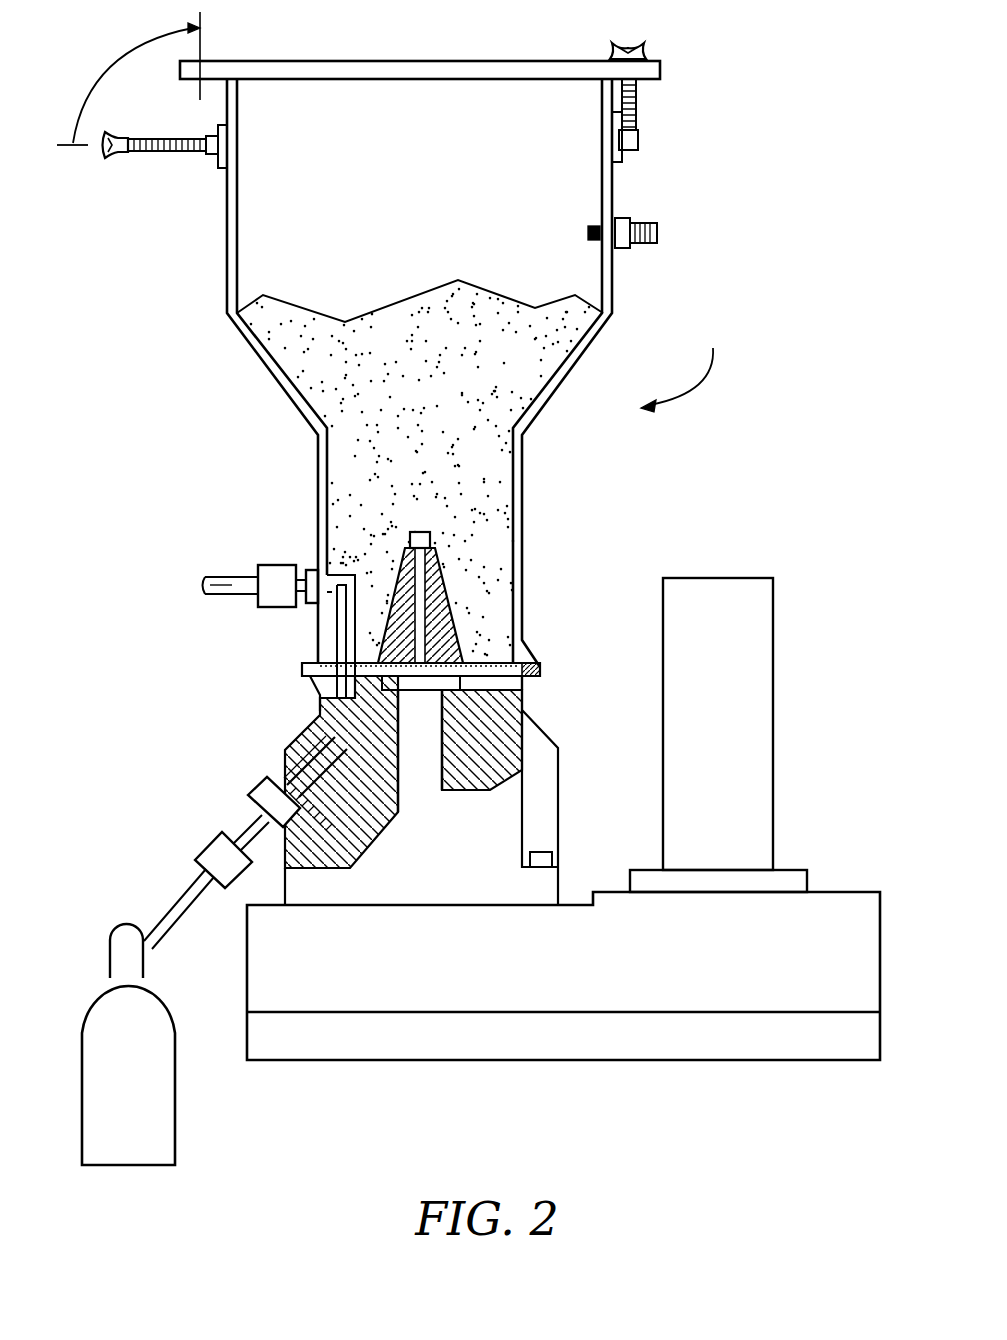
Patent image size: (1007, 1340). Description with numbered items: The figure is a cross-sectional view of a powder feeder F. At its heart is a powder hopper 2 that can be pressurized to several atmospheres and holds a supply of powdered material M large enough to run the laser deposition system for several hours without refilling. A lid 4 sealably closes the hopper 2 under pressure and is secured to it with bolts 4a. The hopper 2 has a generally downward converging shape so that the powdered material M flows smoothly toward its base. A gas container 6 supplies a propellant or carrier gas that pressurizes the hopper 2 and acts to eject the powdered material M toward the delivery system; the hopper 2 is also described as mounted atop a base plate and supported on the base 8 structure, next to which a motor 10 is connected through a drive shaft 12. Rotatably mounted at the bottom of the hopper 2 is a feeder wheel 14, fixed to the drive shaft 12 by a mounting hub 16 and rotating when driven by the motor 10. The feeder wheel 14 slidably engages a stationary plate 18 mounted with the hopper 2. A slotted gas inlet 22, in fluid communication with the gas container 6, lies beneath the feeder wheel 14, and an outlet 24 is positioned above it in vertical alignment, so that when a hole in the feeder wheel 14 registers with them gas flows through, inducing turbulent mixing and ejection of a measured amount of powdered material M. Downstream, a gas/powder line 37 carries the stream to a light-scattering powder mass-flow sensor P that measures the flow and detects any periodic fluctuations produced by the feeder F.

The powder hopper 2 is at (421, 181).
The lid 4 is at (413, 67).
The bolts 4a is at (168, 155).
The gas container 6 is at (121, 1101).
The base 8 is at (549, 971).
The motor 10 is at (773, 650).
The drive shaft 12 is at (409, 757).
The feeder wheel 14 is at (485, 658).
The mounting hub 16 is at (443, 573).
The stationary plate 18 is at (538, 670).
The slotted gas inlet 22 is at (318, 714).
The outlet 24 is at (333, 635).
The gas/powder line 37 is at (223, 587).
The powder feeder F is at (681, 366).
The powdered material M is at (409, 449).
The powder mass-flow sensor P is at (273, 565).